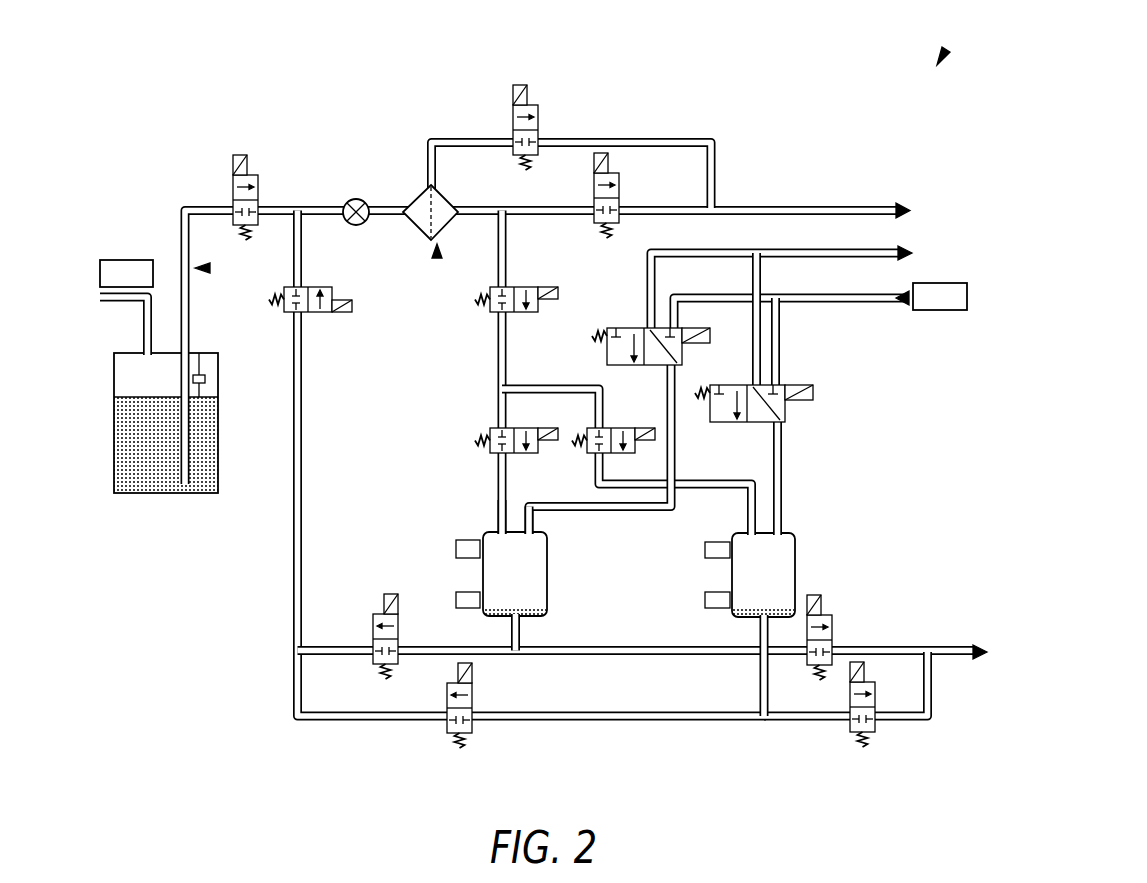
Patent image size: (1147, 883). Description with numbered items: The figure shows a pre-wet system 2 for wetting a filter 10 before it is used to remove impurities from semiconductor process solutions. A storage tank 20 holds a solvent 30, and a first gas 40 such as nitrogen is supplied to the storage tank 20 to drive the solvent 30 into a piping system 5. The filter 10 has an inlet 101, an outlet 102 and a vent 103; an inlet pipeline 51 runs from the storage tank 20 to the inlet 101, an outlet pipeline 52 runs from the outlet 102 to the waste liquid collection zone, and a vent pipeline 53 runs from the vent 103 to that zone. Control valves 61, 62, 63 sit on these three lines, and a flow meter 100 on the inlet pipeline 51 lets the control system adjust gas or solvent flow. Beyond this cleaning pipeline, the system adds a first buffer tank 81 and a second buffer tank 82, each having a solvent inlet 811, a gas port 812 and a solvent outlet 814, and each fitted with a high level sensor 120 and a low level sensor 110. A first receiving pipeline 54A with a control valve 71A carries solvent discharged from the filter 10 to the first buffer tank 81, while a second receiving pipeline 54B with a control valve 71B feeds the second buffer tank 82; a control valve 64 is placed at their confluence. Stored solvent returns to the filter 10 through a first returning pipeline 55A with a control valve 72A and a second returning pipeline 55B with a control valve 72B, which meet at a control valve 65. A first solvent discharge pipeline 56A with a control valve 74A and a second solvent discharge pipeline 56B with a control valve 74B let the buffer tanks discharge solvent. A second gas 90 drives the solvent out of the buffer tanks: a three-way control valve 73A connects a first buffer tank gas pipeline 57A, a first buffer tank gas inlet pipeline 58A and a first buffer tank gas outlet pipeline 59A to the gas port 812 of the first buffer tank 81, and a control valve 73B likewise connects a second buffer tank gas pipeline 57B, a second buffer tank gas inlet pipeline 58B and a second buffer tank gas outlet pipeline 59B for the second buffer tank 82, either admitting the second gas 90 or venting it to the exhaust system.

The pre-wet system 2 is at (946, 52).
The piping system 5 is at (209, 268).
The filter 10 is at (437, 256).
The storage tank 20 is at (220, 460).
The solvent 30 is at (205, 417).
The first gas 40 is at (128, 302).
The inlet pipeline 51 is at (178, 213).
The outlet pipeline 52 is at (630, 216).
The vent pipeline 53 is at (658, 137).
The first receiving pipeline 54A is at (498, 404).
The second receiving pipeline 54B is at (552, 385).
The first returning pipeline 55A is at (338, 647).
The second returning pipeline 55B is at (636, 724).
The first solvent discharge pipeline 56A is at (895, 648).
The second solvent discharge pipeline 56B is at (900, 724).
The first buffer tank gas pipeline 57A is at (680, 456).
The second buffer tank gas pipeline 57B is at (785, 456).
The first buffer tank gas inlet pipeline 58A is at (686, 294).
The second buffer tank gas inlet pipeline 58B is at (783, 334).
The first buffer tank gas outlet pipeline 59A is at (686, 248).
The second buffer tank gas outlet pipeline 59B is at (762, 279).
The control valve 61 is at (248, 172).
The control valve 62 is at (608, 170).
The control valve 63 is at (528, 104).
The control valve 64 is at (560, 292).
The control valve 65 is at (340, 292).
The control valve 71A is at (486, 448).
The control valve 71B is at (607, 426).
The control valve 72A is at (382, 612).
The control valve 72B is at (455, 748).
The control valve 73A is at (685, 352).
The control valve 73B is at (810, 400).
The control valve 74A is at (818, 668).
The control valve 74B is at (863, 748).
The first buffer tank 81 is at (540, 576).
The second buffer tank 82 is at (787, 575).
The second gas 90 is at (940, 312).
The flow meter 100 is at (355, 198).
The inlet 101 is at (401, 214).
The outlet 102 is at (458, 213).
The vent 103 is at (428, 184).
The low level sensor 110 is at (457, 600).
The high level sensor 120 is at (457, 550).
The solvent inlet 811 is at (500, 531).
The gas port 812 is at (536, 530).
The solvent outlet 814 is at (520, 618).